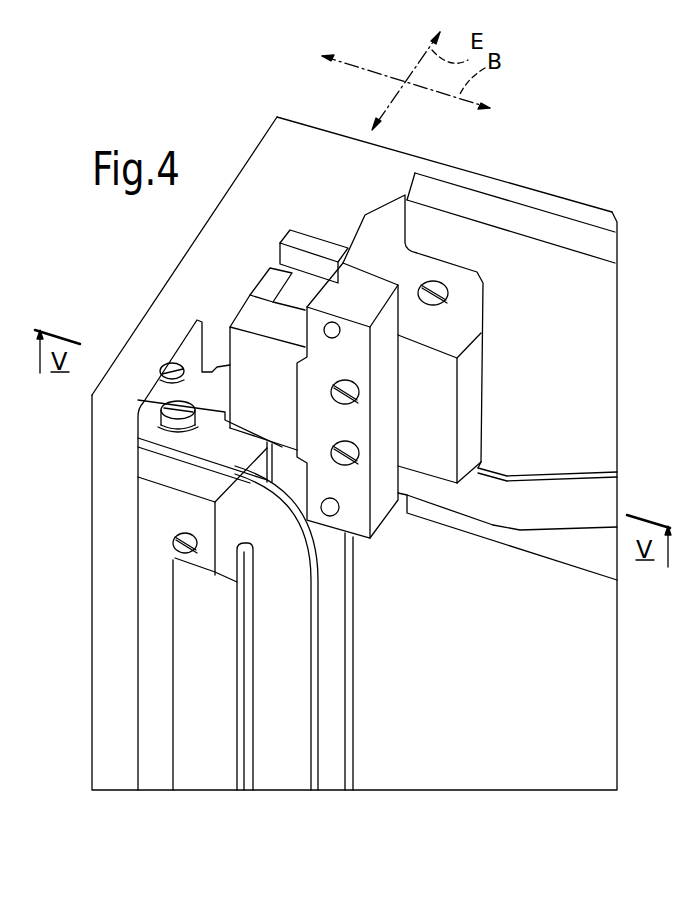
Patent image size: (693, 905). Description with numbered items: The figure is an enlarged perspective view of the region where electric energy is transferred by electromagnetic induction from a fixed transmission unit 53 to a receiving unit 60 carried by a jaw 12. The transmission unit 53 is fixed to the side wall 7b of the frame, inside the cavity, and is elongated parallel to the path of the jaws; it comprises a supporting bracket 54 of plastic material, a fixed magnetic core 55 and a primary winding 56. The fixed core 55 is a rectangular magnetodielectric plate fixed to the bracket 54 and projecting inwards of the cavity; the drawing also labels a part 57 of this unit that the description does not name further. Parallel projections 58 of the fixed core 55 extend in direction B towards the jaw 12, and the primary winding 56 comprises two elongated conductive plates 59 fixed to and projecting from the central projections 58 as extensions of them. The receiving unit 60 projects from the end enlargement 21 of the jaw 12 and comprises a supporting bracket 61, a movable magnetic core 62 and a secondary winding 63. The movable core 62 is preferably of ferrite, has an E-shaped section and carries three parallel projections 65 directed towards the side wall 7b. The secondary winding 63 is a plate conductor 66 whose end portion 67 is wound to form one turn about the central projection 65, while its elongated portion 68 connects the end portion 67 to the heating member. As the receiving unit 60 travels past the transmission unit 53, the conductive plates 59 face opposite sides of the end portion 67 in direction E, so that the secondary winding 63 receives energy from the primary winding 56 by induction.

The side wall 7b is at (143, 350).
The jaw 12 is at (557, 286).
The end enlargement 21 is at (510, 270).
The transmission unit 53 is at (205, 692).
The supporting bracket 54 is at (150, 490).
The fixed magnetic core 55 is at (200, 637).
The primary winding 56 is at (183, 451).
The rib 57 is at (182, 570).
The projection 58 is at (227, 748).
The conductive plate 59 is at (333, 667).
The receiving unit 60 is at (329, 209).
The supporting bracket 61 is at (378, 237).
The movable magnetic core 62 is at (303, 239).
The secondary winding 63 is at (497, 526).
The projection 65 is at (265, 281).
The plate conductor 66 is at (552, 493).
The end portion 67 is at (300, 290).
The elongated portion 68 is at (583, 517).